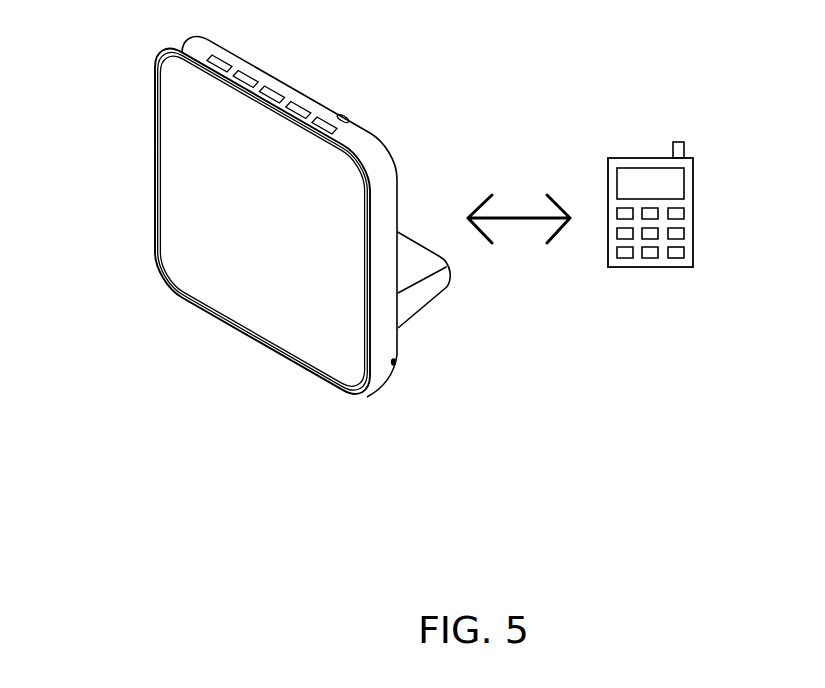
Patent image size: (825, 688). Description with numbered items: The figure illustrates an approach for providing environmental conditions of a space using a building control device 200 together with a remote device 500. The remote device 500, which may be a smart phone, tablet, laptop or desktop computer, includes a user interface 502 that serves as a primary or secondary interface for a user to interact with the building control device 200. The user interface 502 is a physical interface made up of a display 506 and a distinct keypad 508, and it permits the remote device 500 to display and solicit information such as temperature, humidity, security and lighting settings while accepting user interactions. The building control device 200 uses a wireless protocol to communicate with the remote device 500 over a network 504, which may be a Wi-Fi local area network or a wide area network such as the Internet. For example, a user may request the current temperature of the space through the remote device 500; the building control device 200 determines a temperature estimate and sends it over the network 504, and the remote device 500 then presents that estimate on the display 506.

The building control device 200 is at (373, 82).
The remote device 500 is at (698, 174).
The user interface 502 is at (691, 215).
The network 504 is at (517, 220).
The display 506 is at (677, 178).
The keypad 508 is at (678, 253).